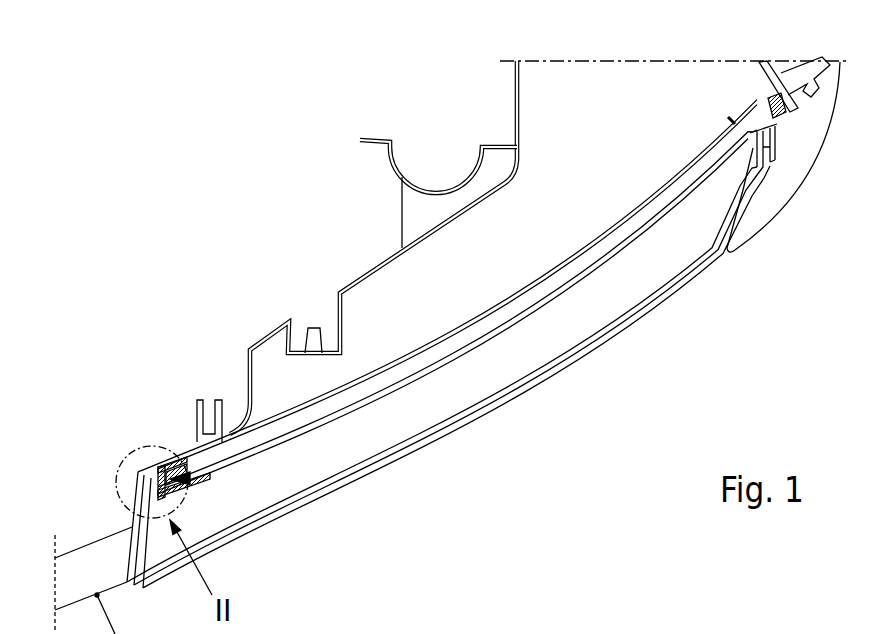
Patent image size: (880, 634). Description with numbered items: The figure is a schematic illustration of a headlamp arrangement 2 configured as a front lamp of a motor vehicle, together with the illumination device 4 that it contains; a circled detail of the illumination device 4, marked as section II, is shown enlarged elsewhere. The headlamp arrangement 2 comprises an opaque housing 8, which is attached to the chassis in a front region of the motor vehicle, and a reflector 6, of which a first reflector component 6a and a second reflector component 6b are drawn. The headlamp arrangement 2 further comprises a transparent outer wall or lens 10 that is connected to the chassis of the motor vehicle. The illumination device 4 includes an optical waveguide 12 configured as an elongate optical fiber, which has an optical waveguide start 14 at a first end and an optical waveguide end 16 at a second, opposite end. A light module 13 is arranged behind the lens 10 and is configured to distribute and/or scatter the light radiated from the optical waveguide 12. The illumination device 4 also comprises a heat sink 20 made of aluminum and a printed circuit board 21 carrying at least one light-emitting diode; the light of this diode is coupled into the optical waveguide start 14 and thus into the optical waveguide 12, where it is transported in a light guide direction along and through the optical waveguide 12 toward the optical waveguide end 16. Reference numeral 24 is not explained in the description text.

The headlamp arrangement 2 is at (213, 242).
The illumination device 4 is at (494, 461).
The reflector 6 is at (447, 351).
The first reflector component 6a is at (560, 260).
The second reflector component 6b is at (181, 497).
The opaque housing 8 is at (518, 160).
The lens 10 is at (549, 379).
The optical waveguide 12 is at (248, 456).
The light module 13 is at (623, 322).
The optical waveguide start 14 is at (780, 113).
The optical waveguide end 16 is at (211, 400).
The heat sink 20 is at (778, 66).
The printed circuit board 21 is at (767, 77).
The seal element 24 is at (165, 468).